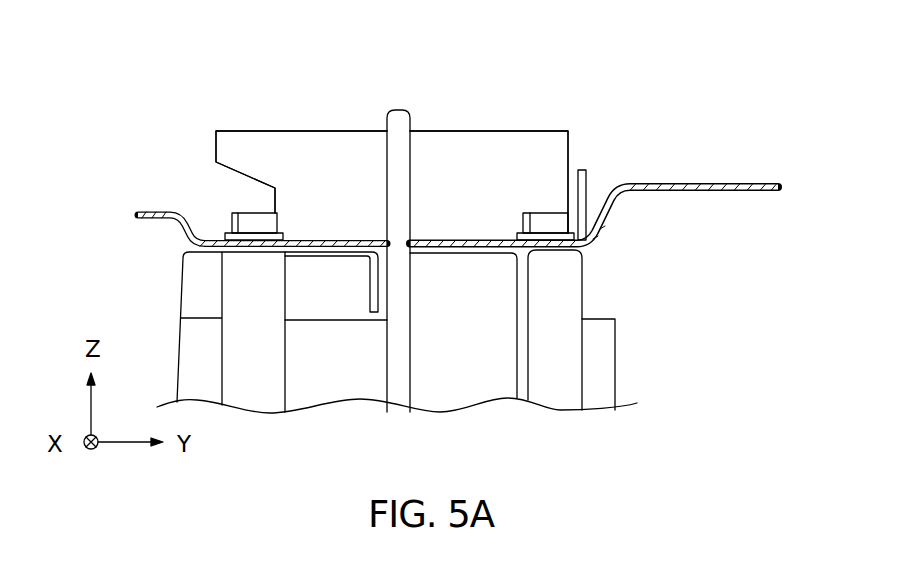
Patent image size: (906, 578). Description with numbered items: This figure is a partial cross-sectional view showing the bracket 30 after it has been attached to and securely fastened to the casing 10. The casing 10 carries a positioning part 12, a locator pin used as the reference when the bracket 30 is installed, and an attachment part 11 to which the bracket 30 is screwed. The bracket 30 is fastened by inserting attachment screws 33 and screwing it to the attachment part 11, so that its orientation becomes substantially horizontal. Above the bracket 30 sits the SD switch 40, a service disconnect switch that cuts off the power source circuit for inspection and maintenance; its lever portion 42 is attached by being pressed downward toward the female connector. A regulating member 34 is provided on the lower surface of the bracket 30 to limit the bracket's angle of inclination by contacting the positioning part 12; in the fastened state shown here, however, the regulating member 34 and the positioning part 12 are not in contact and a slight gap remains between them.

The casing 10 is at (615, 365).
The attachment part 11 is at (583, 298).
The positioning part 12 is at (413, 120).
The bracket 30 is at (675, 183).
The attachment screw 33 is at (247, 225).
The regulating member 34 is at (373, 283).
The SD switch 40 is at (392, 182).
The lever portion 42 is at (352, 130).